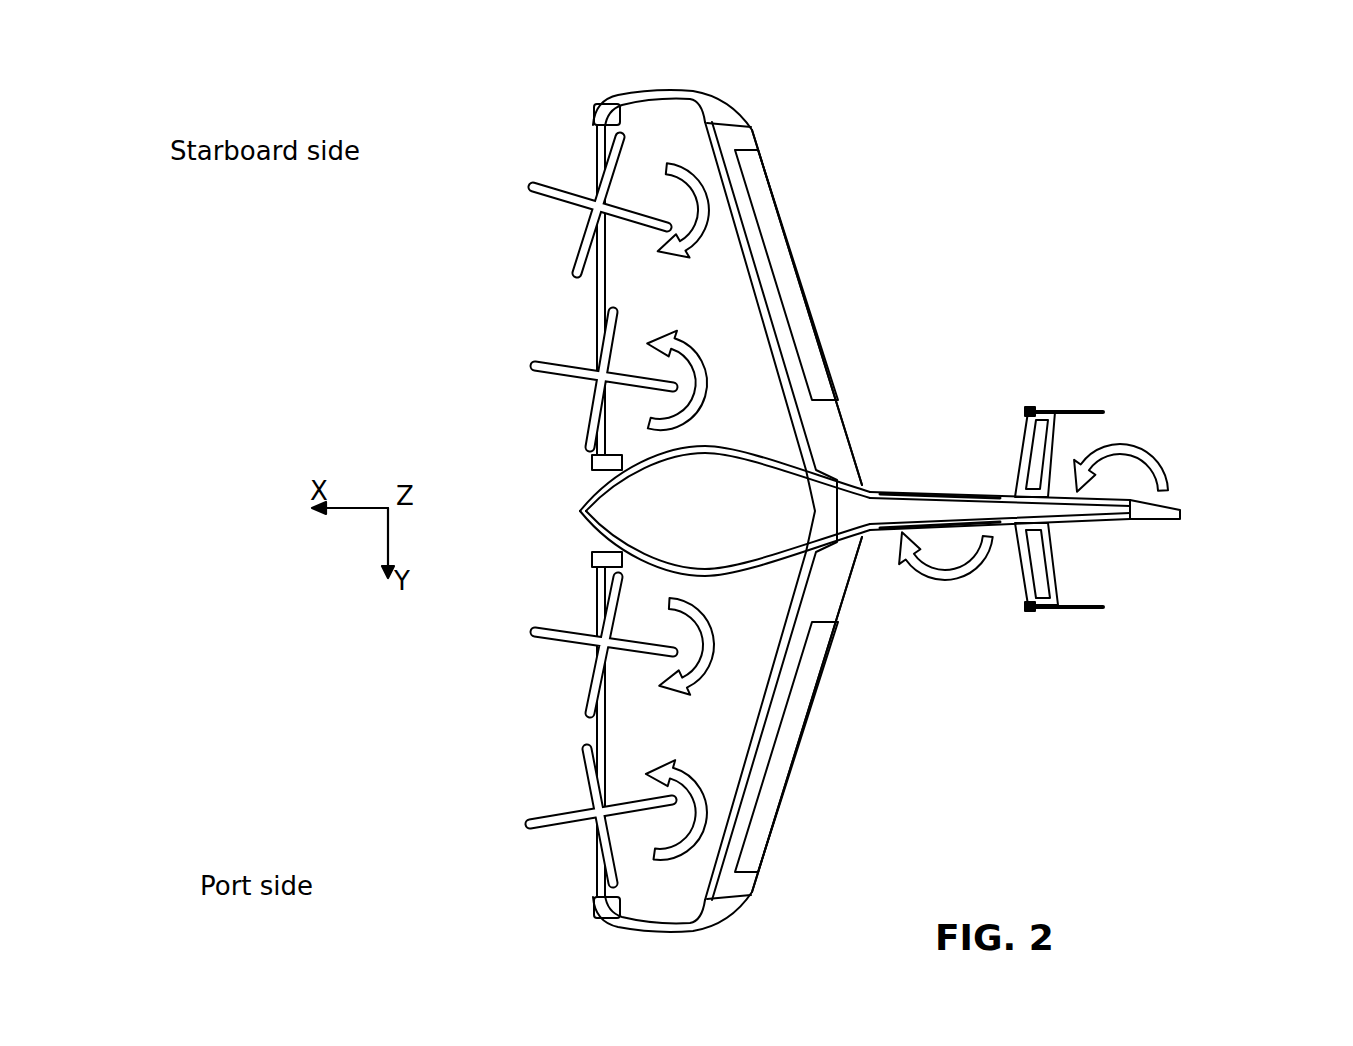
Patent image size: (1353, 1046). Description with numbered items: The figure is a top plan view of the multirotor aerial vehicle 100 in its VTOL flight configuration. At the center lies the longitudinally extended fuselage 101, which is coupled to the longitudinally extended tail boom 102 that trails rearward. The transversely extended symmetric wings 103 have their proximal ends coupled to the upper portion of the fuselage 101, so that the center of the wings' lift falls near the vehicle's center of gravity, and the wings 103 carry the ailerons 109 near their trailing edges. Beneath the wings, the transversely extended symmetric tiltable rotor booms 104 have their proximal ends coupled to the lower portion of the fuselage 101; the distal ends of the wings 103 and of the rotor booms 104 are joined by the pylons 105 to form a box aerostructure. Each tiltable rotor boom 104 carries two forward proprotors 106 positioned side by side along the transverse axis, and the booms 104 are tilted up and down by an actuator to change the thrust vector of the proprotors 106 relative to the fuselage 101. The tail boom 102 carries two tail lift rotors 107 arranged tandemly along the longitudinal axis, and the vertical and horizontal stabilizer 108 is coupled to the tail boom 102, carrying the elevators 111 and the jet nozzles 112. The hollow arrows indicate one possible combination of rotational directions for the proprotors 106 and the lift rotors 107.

The multirotor aerial vehicle 100 is at (853, 134).
The fuselage 101 is at (757, 450).
The tail boom 102 is at (955, 495).
The wings 103 is at (758, 140).
The tiltable rotor booms 104 is at (597, 147).
The pylons 105 is at (640, 96).
The forward proprotors 106 is at (532, 190).
The tail lift rotors 107 is at (897, 492).
The vertical and horizontal stabilizer 108 is at (1073, 410).
The ailerons 109 is at (834, 330).
The elevators 111 is at (1053, 462).
The jet nozzles 112 is at (1035, 410).